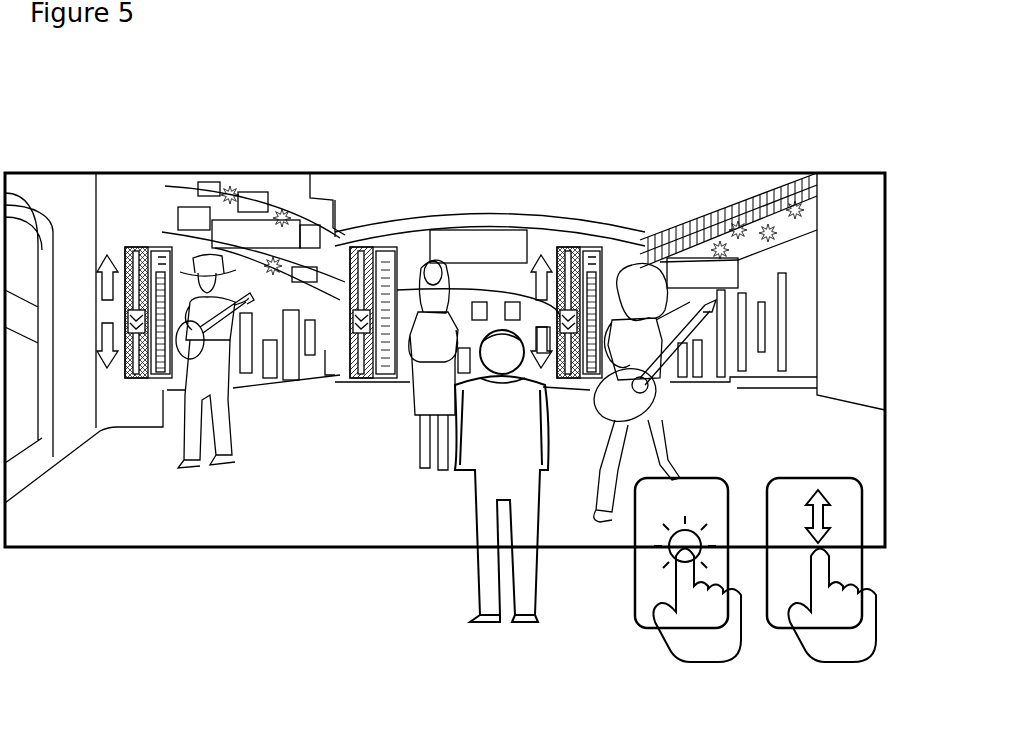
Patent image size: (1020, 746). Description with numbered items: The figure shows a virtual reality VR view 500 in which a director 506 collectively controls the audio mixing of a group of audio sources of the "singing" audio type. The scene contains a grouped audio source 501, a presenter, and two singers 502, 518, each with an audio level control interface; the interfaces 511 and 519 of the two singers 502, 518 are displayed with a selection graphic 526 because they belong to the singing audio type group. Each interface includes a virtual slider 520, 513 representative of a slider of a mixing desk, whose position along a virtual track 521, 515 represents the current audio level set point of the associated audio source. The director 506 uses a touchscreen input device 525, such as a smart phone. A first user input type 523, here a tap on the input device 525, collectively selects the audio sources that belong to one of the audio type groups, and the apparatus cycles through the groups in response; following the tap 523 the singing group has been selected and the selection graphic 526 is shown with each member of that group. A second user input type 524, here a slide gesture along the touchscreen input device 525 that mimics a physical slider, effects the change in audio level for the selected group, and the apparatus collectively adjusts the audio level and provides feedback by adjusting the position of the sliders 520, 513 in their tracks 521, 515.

The VR view 500 is at (268, 174).
The grouped audio source 501 is at (430, 262).
The singer 502 is at (672, 222).
The director 506 is at (473, 573).
The audio level control interface 511 is at (597, 247).
The slider 513 is at (543, 370).
The virtual track 515 is at (577, 247).
The singer 518 is at (203, 268).
The audio level control interface 519 is at (143, 250).
The slider 520 is at (125, 318).
The virtual track 521 is at (140, 368).
The first user input type 523 is at (606, 610).
The second user input type 524 is at (857, 676).
The touchscreen input device 525 is at (635, 598).
The selection graphic 526 is at (100, 268).